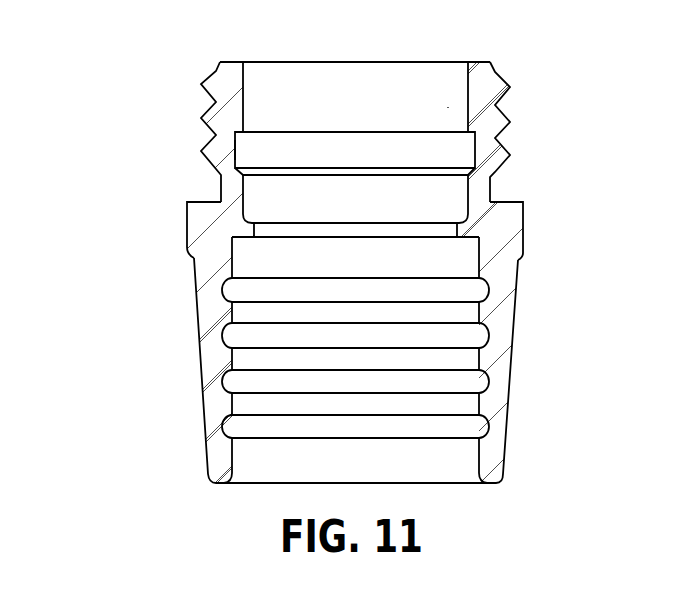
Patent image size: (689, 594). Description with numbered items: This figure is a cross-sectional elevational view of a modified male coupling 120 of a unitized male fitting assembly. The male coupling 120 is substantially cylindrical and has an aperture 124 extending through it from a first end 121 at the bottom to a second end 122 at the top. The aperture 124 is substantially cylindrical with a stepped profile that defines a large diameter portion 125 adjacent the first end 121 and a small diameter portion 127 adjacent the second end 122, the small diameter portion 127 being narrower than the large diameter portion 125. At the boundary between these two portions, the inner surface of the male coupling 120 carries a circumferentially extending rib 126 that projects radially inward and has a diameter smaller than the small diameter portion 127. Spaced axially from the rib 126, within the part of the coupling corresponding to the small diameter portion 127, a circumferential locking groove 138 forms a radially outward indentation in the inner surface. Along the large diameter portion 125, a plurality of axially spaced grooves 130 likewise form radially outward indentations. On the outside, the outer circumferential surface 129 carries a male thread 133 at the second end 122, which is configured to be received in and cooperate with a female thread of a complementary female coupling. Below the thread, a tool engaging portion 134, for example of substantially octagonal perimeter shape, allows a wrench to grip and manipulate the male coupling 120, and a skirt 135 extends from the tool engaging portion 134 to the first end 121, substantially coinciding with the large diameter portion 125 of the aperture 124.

The male coupling 120 is at (122, 138).
The first end 121 is at (497, 485).
The second end 122 is at (482, 62).
The aperture 124 is at (355, 101).
The large diameter portion 125 is at (459, 260).
The rib 126 is at (455, 228).
The small diameter portion 127 is at (447, 108).
The outer circumferential surface 129 is at (187, 245).
The grooves 130 is at (223, 380).
The male thread 133 is at (209, 99).
The tool engaging portion 134 is at (187, 208).
The skirt 135 is at (201, 390).
The locking groove 138 is at (237, 150).